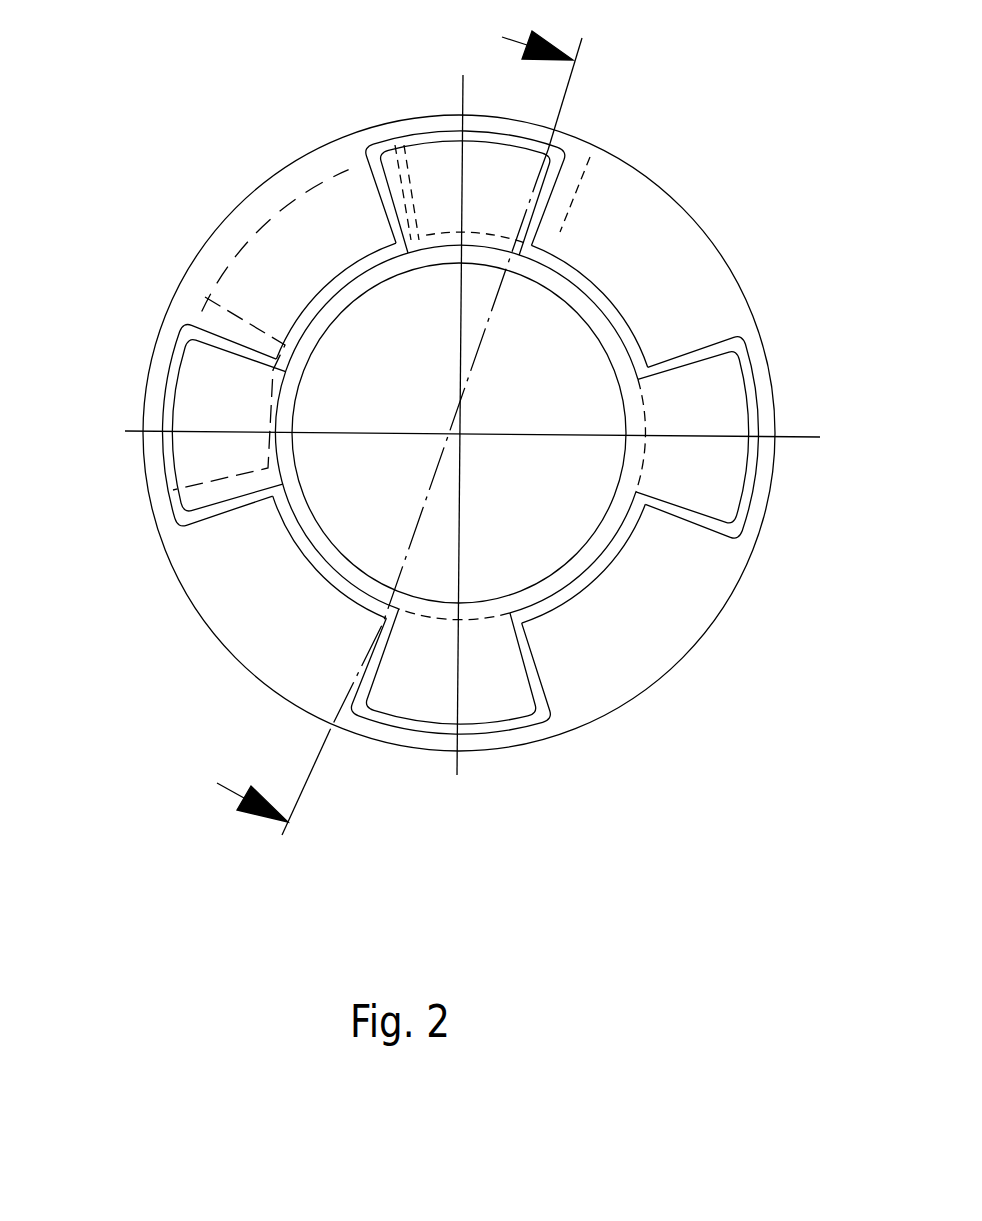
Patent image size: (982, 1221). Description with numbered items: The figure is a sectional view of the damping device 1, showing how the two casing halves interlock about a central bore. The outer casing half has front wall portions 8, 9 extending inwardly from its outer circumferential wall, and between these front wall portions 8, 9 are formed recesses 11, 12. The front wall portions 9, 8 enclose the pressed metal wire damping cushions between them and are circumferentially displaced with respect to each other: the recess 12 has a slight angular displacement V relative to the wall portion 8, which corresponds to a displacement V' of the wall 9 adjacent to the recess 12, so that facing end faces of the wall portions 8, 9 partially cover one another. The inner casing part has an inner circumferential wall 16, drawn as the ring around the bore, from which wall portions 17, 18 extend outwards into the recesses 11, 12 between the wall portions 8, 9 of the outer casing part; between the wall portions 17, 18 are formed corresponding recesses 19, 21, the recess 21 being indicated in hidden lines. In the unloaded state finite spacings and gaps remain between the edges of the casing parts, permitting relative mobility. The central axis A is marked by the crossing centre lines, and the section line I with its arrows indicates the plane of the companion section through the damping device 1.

The damping device 1 is at (150, 509).
The front wall portion 8 is at (713, 267).
The front wall portion 9 is at (207, 404).
The recess 11 is at (750, 510).
The recess 12 is at (432, 130).
The inner circumferential wall 16 is at (332, 556).
The wall portion 17 is at (292, 237).
The wall portion 18 is at (488, 697).
The recess 19 is at (557, 695).
The recess 21 is at (192, 309).
The axis A is at (463, 440).
The angular displacement V is at (407, 134).
The displacement V' is at (635, 153).
The section line I- I is at (407, 436).